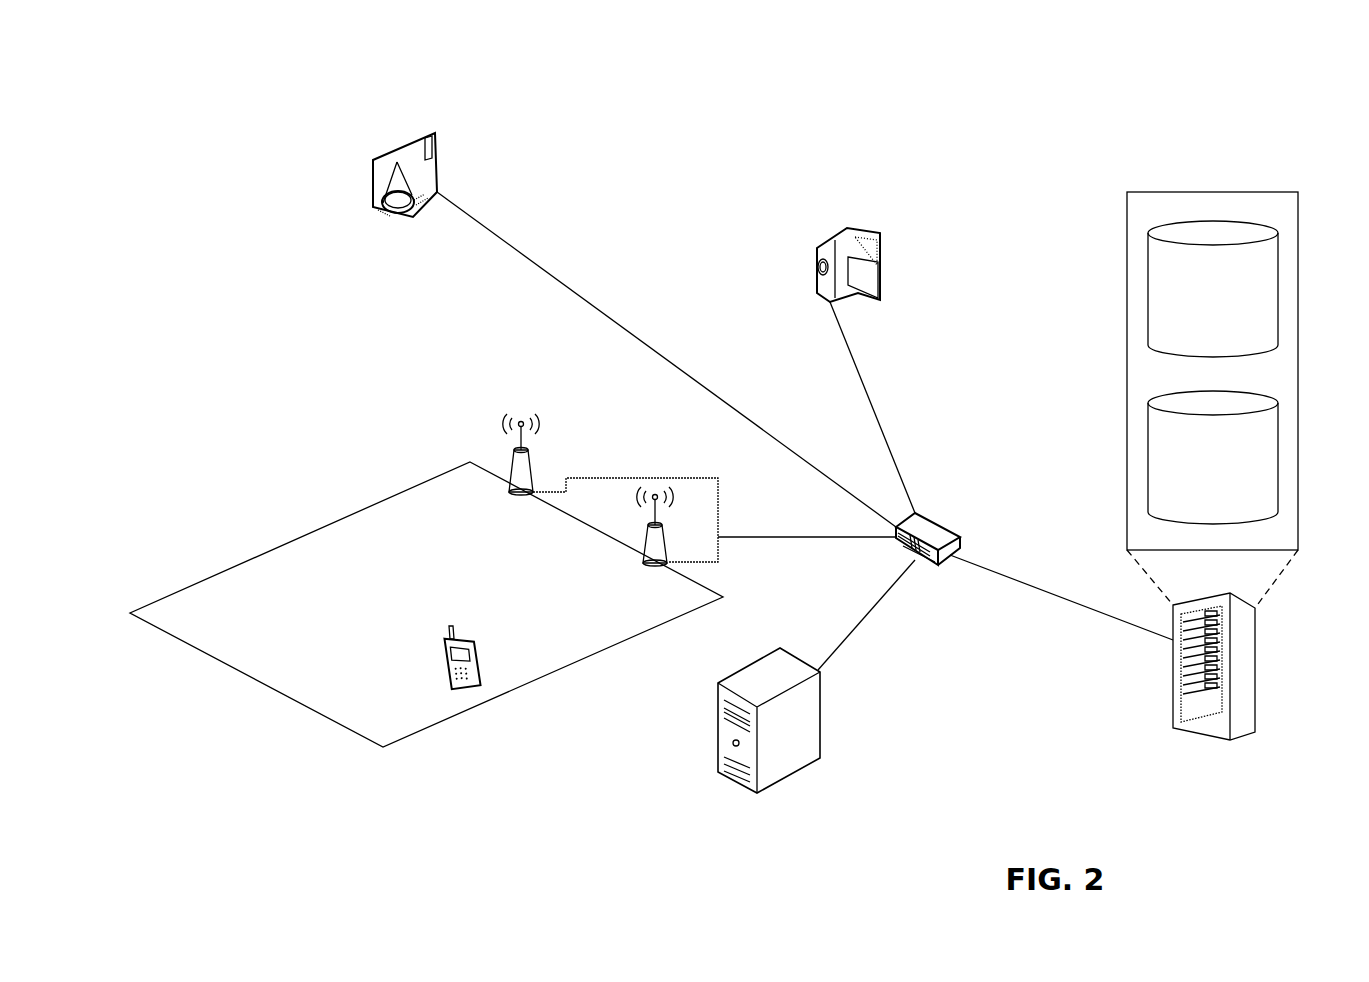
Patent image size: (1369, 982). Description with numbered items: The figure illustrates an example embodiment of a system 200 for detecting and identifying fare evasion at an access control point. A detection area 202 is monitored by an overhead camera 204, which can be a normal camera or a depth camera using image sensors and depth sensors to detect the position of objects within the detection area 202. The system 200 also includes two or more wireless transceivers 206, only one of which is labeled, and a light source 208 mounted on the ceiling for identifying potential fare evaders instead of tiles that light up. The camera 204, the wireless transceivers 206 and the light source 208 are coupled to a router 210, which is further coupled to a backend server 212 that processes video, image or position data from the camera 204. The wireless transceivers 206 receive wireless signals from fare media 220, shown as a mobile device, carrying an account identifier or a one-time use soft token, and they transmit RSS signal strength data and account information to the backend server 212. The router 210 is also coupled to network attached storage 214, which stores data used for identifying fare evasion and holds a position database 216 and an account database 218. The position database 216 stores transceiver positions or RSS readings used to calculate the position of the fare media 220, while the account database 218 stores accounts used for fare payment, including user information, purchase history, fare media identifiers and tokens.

The system 200 is at (1043, 98).
The detection area 202 is at (252, 559).
The camera 204 is at (868, 228).
The wireless transceiver 206 is at (530, 416).
The light source 208 is at (435, 133).
The router 210 is at (962, 537).
The backend server 212 is at (718, 772).
The network attached storage 214 is at (1255, 680).
The position database 216 is at (1213, 289).
The account database 218 is at (1213, 457).
The fare media 220 is at (452, 624).